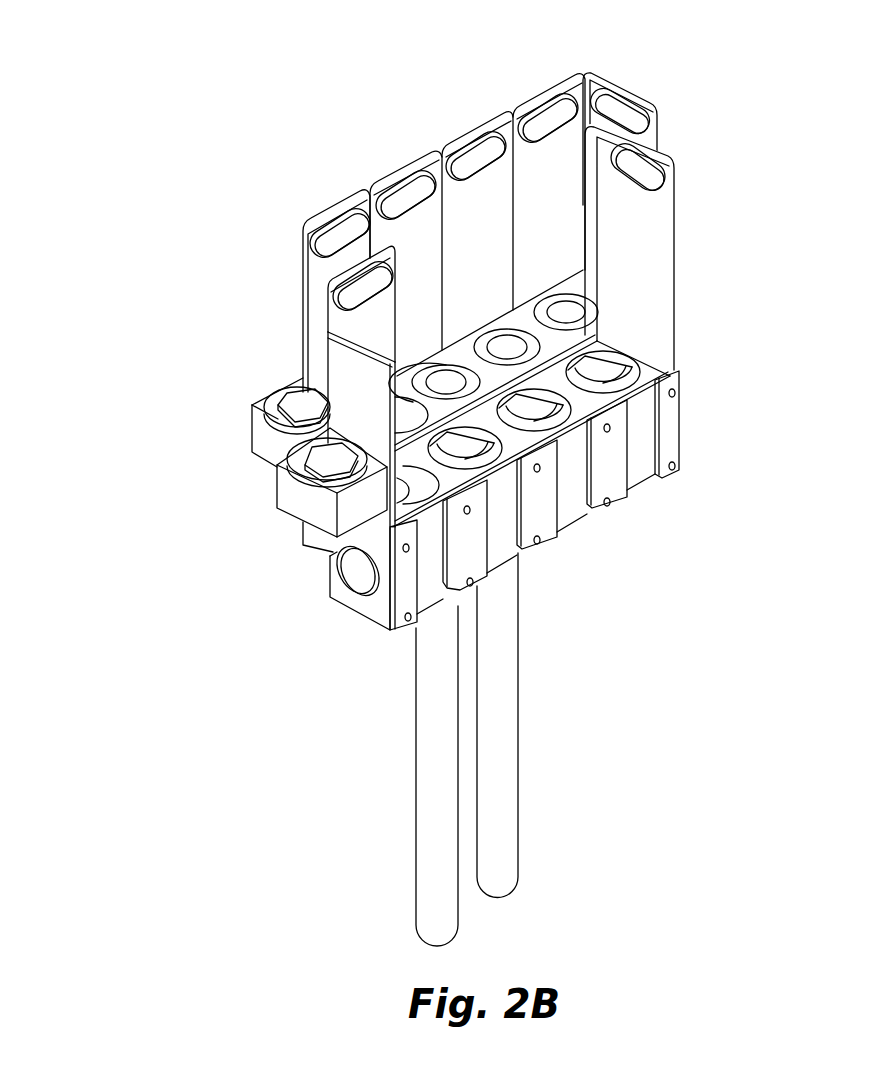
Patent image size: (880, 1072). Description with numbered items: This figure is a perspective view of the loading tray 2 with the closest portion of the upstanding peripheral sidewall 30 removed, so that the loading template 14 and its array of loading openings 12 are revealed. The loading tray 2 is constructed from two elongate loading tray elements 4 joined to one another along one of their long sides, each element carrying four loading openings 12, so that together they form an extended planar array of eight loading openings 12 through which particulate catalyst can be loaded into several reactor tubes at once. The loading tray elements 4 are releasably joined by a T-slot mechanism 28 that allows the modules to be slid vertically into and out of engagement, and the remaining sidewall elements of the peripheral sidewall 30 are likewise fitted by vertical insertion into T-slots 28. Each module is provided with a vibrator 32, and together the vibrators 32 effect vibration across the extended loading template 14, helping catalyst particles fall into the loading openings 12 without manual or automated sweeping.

The loading tray 2 is at (676, 104).
The loading tray element 4 is at (405, 630).
The loading opening 12 is at (465, 458).
The loading template 14 is at (653, 369).
The T-slot 28 is at (440, 420).
The upstanding peripheral sidewall 30 is at (487, 108).
The vibrator 32 is at (293, 502).